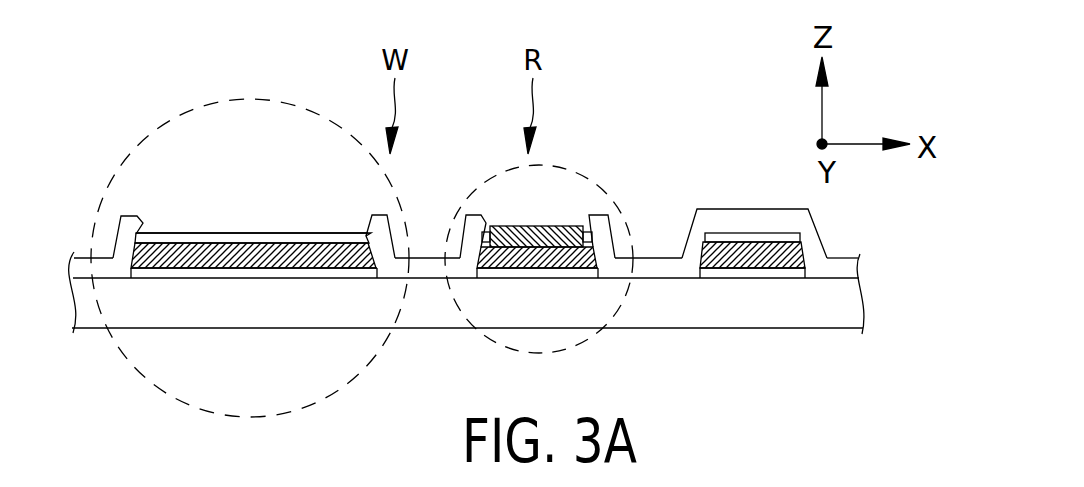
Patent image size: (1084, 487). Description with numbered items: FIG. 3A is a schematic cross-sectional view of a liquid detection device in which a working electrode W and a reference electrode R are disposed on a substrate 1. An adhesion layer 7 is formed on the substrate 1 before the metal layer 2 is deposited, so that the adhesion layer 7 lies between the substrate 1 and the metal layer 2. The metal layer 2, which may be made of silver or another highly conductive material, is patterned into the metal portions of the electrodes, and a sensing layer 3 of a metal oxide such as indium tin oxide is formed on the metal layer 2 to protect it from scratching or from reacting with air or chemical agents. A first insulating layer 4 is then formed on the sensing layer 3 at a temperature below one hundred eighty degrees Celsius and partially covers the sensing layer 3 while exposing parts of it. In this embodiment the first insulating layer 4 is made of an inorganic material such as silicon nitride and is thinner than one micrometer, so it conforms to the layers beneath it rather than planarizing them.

The substrate 1 is at (848, 308).
The metal layer 2 is at (794, 250).
The sensing layer 3 is at (790, 232).
The first insulating layer 4 is at (852, 267).
The adhesion layer 7 is at (768, 279).